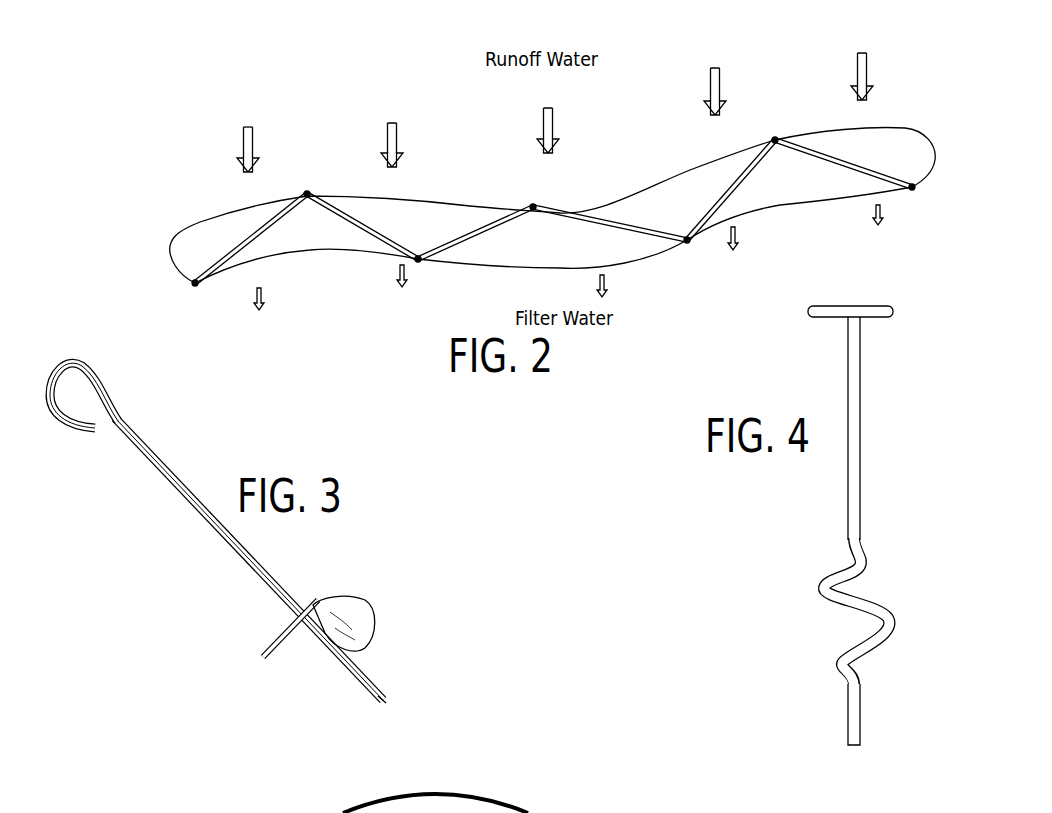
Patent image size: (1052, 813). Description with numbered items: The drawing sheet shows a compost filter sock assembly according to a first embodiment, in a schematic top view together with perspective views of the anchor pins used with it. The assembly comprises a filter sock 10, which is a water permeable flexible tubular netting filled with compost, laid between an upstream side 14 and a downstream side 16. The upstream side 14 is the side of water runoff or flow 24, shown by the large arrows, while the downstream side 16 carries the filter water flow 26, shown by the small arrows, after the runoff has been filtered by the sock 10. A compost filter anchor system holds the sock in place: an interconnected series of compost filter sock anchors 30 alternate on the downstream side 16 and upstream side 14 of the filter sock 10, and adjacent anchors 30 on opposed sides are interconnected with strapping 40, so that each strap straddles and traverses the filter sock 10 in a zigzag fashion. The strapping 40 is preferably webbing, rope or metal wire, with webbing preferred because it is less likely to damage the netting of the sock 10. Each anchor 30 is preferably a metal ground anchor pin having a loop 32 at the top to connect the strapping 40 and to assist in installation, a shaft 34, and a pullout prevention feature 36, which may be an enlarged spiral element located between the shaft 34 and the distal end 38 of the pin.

In FIG. 2, the compost filter sock 10 is at (178, 233).
In FIG. 2, the upstream side 14 is at (736, 45).
In FIG. 2, the downstream side 16 is at (777, 273).
In FIG. 2, the water runoff flow 24 is at (385, 133).
In FIG. 2, the filter water flow 26 is at (268, 292).
In FIG. 2, the compost filter sock anchor 30 is at (195, 284).
In FIG. 3, the compost filter sock anchor 30 is at (248, 536).
In FIG. 3, the loop 32 is at (63, 425).
In FIG. 4, the loop 32 is at (827, 319).
In FIG. 3, the shaft 34 is at (202, 525).
In FIG. 4, the shaft 34 is at (861, 437).
In FIG. 3, the pullout prevention feature 36 is at (333, 603).
In FIG. 4, the pullout prevention feature 36 is at (884, 607).
In FIG. 3, the distal end 38 is at (388, 704).
In FIG. 4, the distal end 38 is at (851, 742).
In FIG. 2, the strapping 40 is at (233, 247).